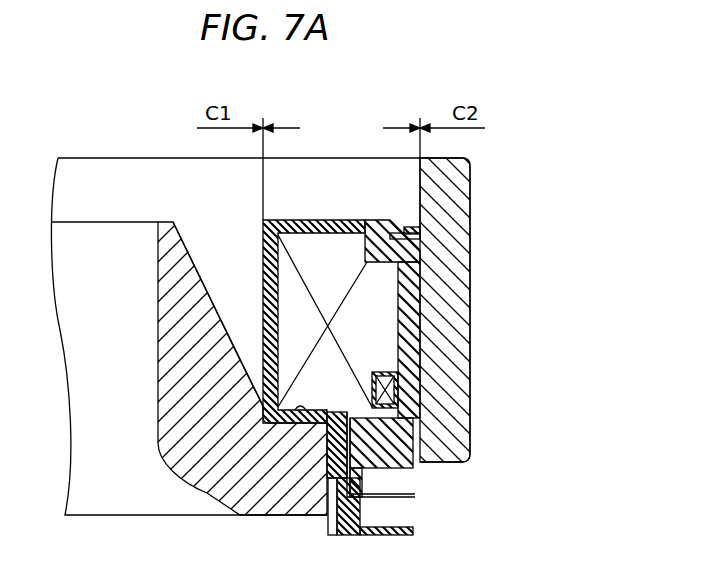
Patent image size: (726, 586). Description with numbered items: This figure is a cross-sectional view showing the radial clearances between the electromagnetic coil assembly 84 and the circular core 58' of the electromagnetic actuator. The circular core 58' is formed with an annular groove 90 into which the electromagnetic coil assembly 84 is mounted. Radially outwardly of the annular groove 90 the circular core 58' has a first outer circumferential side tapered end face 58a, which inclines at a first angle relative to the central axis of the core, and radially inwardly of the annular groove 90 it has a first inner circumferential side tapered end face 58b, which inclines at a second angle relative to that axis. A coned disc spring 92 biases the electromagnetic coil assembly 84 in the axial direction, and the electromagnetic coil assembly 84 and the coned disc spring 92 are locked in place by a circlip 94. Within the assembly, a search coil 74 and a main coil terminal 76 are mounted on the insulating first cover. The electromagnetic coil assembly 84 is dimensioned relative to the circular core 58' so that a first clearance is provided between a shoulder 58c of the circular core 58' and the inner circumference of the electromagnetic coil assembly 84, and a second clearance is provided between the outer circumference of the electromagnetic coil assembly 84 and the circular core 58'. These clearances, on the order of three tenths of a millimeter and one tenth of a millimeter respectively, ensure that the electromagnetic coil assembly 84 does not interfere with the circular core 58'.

The circular core 58' is at (242, 387).
The first outer circumferential side tapered end face 58a is at (423, 172).
The first inner circumferential side tapered end face 58b is at (203, 285).
The shoulder 58c is at (267, 380).
The electromagnetic coil assembly 84 is at (378, 296).
The search coil 74 is at (378, 383).
The coned disc spring 92 is at (396, 230).
The circlip 94 is at (413, 224).
The annular groove 90 is at (323, 487).
The main coil terminal 76 is at (398, 500).